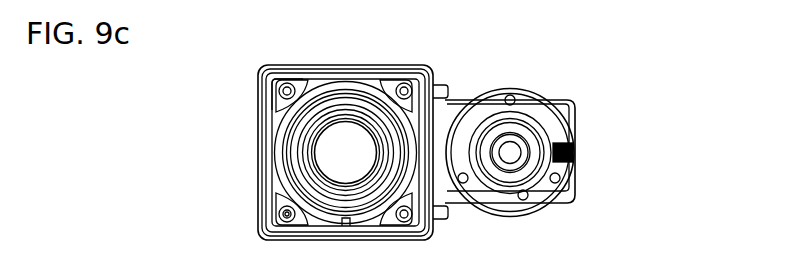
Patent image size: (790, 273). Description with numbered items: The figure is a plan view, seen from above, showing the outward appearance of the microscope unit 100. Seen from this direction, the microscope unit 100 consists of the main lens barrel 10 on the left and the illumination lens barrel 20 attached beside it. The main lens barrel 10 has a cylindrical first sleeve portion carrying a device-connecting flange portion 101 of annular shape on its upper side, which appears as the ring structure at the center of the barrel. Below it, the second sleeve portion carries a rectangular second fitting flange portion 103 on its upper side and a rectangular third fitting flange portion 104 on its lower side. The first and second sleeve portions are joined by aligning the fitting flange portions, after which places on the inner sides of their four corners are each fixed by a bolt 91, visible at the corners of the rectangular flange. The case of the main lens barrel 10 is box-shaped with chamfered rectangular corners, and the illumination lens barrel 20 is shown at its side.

The microscope unit 100 is at (236, 73).
The main lens barrel 10 is at (231, 164).
The device-connecting flange portion 101 is at (355, 82).
The second fitting flange portion 103 is at (299, 79).
The third fitting flange portion 104 is at (276, 67).
The bolt 91 is at (274, 212).
The illumination lens barrel 20 is at (598, 154).